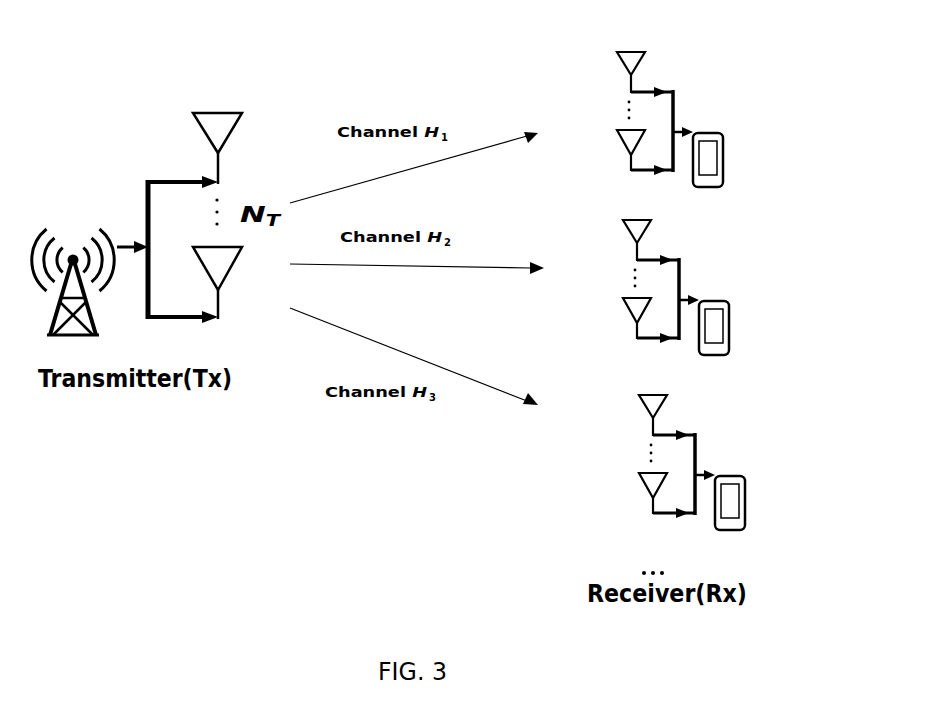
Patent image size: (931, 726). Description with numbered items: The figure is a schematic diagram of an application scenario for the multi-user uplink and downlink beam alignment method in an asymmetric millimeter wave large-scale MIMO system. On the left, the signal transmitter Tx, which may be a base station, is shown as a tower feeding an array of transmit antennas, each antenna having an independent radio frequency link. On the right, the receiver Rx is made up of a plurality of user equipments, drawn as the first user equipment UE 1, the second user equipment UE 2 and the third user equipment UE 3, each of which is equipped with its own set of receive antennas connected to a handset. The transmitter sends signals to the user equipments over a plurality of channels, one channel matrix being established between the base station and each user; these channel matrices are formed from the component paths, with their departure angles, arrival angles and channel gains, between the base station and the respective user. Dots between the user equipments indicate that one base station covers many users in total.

The user equipment 1 is at (679, 119).
The user equipment 2 is at (684, 287).
The user equipment 3 is at (700, 462).